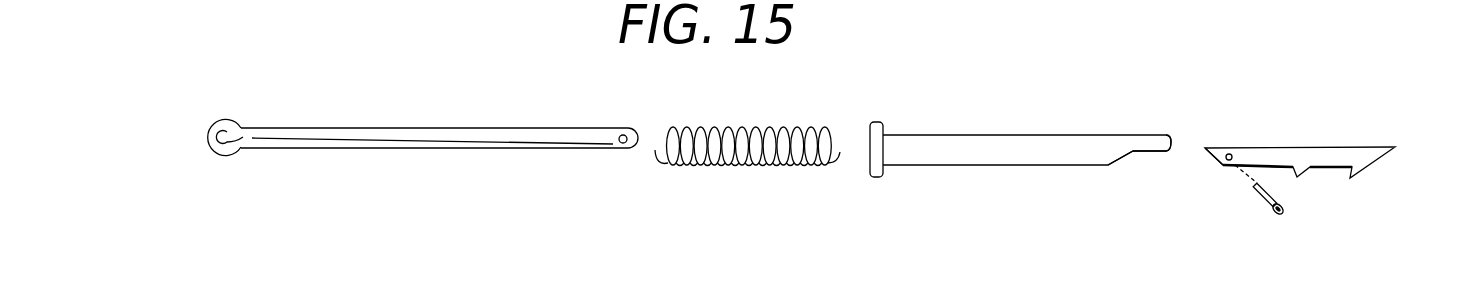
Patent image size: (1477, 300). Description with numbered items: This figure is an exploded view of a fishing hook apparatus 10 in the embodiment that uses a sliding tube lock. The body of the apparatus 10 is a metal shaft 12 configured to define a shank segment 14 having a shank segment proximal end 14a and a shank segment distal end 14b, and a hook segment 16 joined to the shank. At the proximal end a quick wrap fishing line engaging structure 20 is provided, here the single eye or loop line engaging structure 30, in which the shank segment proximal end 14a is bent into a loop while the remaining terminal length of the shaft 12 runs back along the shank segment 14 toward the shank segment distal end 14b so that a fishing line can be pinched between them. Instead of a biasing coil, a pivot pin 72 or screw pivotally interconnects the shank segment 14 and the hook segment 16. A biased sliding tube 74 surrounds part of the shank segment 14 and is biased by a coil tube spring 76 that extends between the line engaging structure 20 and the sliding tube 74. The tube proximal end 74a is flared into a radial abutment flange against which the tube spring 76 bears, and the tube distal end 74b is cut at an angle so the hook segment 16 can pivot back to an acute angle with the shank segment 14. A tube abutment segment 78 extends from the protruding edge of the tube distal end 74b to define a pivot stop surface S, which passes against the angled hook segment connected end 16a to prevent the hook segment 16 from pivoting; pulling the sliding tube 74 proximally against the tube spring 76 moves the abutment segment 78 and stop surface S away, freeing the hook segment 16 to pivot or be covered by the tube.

The fishing hook apparatus 10 is at (1350, 60).
The metal shaft 12 is at (418, 128).
The shank segment 14 is at (512, 140).
The shank segment proximal end 14a is at (262, 128).
The shank segment distal end 14b is at (613, 148).
The hook segment 16 is at (1357, 148).
The hook segment connected end 16a is at (1208, 152).
The quick wrap fishing line engaging structure 20 is at (1235, 148).
The single eye or loop line engaging structure 30 is at (272, 80).
The pivot pin 72 is at (1272, 185).
The biased sliding tube 74 is at (982, 145).
The tube proximal end 74a is at (893, 147).
The tube distal end 74b is at (1113, 150).
The coil tube spring 76 is at (788, 165).
The tube abutment segment 78 is at (1173, 143).
The pivot stop surface S is at (1150, 152).